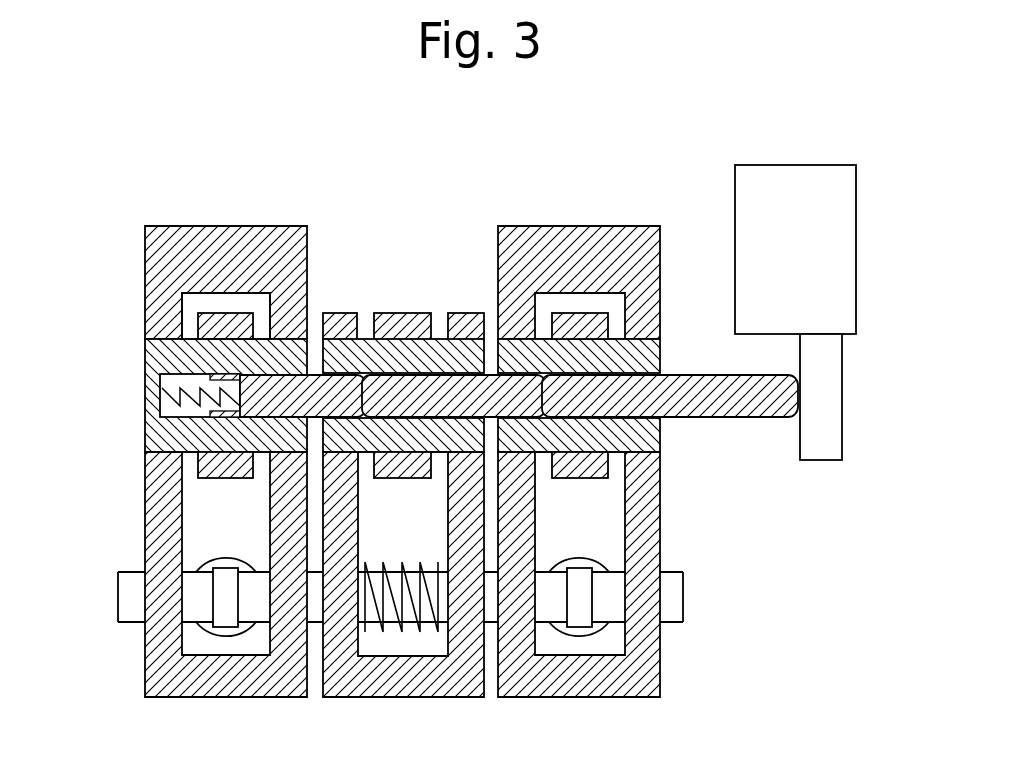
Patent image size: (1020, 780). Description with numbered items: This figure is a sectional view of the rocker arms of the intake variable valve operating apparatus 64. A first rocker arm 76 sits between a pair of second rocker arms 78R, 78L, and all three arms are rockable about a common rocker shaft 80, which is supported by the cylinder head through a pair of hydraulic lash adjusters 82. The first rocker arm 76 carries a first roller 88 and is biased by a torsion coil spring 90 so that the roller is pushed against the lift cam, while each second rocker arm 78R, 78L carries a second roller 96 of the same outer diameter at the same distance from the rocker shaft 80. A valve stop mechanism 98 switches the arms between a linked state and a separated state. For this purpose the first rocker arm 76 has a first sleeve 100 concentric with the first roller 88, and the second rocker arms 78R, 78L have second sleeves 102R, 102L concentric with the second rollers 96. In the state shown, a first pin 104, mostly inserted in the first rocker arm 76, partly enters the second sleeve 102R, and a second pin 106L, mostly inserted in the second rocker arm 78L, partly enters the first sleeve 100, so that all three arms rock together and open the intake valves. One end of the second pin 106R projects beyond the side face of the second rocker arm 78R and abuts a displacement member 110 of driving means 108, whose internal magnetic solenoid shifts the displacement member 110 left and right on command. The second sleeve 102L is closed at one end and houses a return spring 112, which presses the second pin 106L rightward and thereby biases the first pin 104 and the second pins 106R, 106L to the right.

The intake variable valve operating apparatus 64 is at (636, 132).
The first rocker arm 76 is at (396, 473).
The second rocker arm 78L is at (160, 687).
The second rocker arm 78R is at (647, 685).
The rocker shaft 80 is at (685, 595).
The hydraulic lash adjuster 82 is at (228, 637).
The first roller 88 is at (407, 327).
The torsion coil spring 90 is at (402, 627).
The second roller 96 is at (193, 329).
The valve stop mechanism 98 is at (519, 350).
The first sleeve 100 is at (368, 353).
The second sleeve 102L is at (213, 346).
The second sleeve 102R is at (563, 353).
The first pin 104 is at (438, 390).
The second pin 106L is at (283, 378).
The second pin 106R is at (633, 393).
The driving means 108 is at (735, 207).
The displacement member 110 is at (830, 460).
The return spring 112 is at (170, 408).